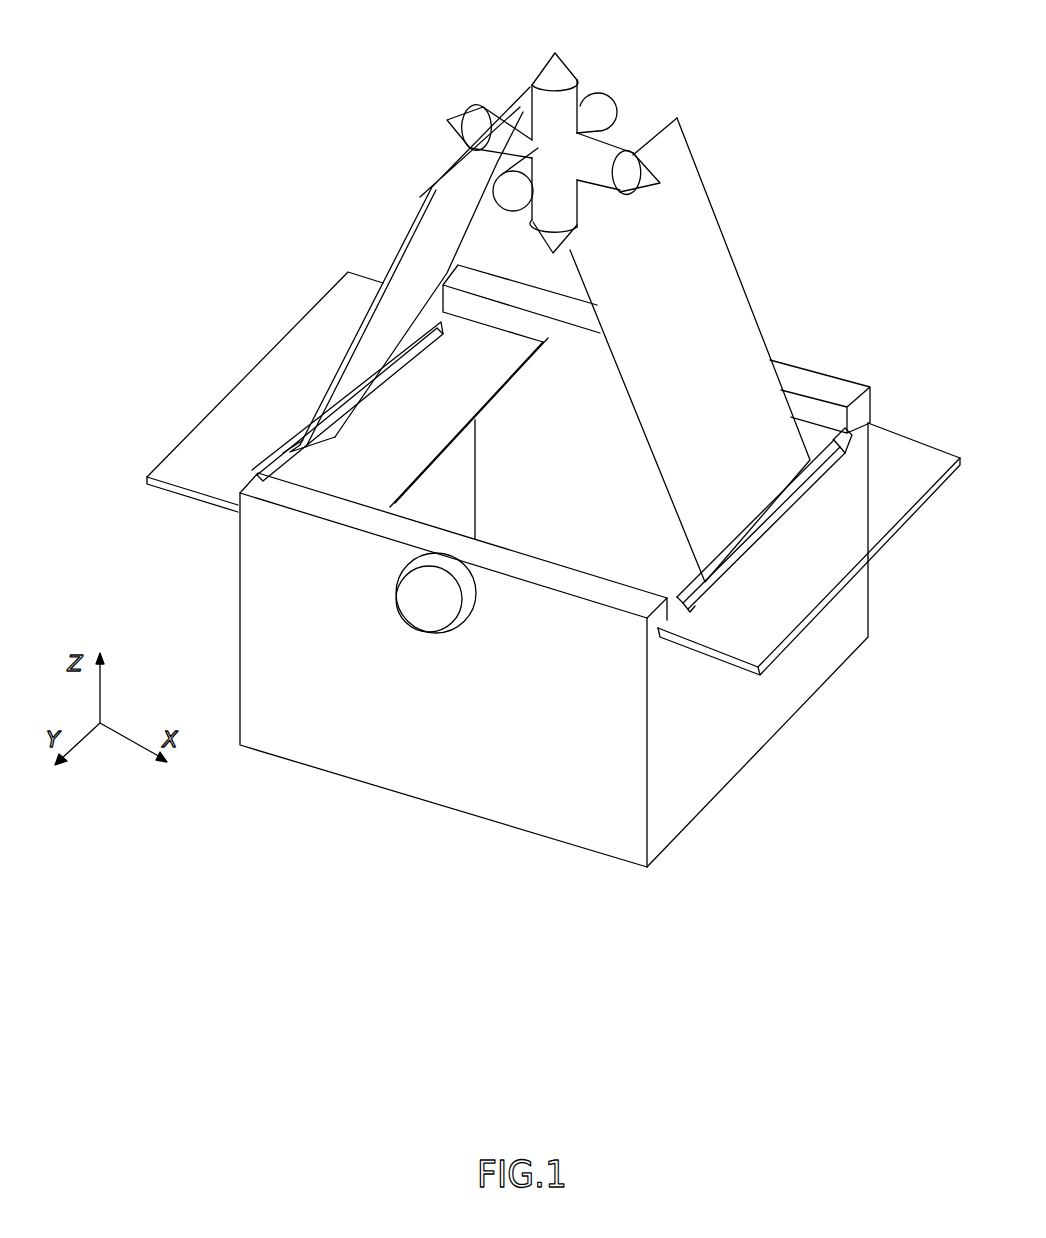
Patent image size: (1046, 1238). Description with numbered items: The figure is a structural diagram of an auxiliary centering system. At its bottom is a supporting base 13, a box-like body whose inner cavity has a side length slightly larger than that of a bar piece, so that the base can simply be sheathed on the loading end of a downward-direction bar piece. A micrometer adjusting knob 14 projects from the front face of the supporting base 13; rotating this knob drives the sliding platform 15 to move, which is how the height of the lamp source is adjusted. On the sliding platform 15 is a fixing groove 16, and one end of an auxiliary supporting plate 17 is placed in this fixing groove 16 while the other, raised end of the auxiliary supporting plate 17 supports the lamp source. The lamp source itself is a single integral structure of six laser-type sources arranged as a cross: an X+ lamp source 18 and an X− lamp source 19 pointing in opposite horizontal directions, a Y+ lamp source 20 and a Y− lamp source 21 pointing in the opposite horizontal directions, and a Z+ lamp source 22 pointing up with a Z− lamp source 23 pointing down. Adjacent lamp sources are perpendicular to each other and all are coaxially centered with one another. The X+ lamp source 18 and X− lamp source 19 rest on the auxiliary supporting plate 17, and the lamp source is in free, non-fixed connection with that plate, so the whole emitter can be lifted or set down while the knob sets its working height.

The supporting base 13 is at (298, 606).
The micrometer adjusting knob 14 is at (440, 617).
The sliding platform 15 is at (317, 342).
The fixing groove 16 is at (280, 457).
The auxiliary supporting plate 17 is at (707, 358).
The X+ lamp source 18 is at (467, 123).
The X− lamp source 19 is at (627, 173).
The Y+ lamp source 20 is at (512, 193).
The Y− lamp source 21 is at (613, 97).
The Z+ lamp source 22 is at (553, 83).
The Z− lamp source 23 is at (560, 238).